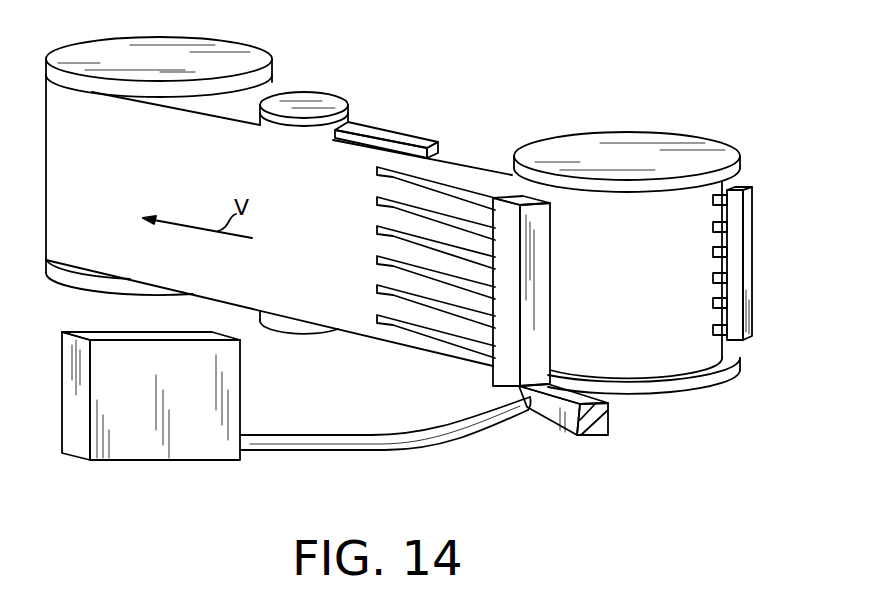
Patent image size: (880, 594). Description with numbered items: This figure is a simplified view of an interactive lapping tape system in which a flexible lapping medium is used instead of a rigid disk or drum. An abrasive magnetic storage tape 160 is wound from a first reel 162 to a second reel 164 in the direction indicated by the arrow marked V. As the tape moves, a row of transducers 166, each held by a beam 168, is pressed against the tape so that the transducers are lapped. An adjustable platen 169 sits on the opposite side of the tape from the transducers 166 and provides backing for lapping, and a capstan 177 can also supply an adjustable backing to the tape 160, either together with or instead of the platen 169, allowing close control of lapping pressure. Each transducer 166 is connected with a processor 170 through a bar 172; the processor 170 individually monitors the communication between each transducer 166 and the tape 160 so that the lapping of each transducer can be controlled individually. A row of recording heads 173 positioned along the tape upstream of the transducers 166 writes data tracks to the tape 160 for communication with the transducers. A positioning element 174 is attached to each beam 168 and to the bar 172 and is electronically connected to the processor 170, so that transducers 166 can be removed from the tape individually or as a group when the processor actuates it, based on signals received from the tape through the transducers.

The tape 160 is at (670, 350).
The first reel 162 is at (667, 140).
The second reel 164 is at (244, 42).
The transducers 166 is at (382, 163).
The beam 168 is at (435, 336).
The adjustable platen 169 is at (397, 135).
The processor 170 is at (242, 378).
The bar 172 is at (540, 285).
The recording heads 173 is at (713, 330).
The positioning element 174 is at (493, 195).
The capstan 177 is at (312, 95).